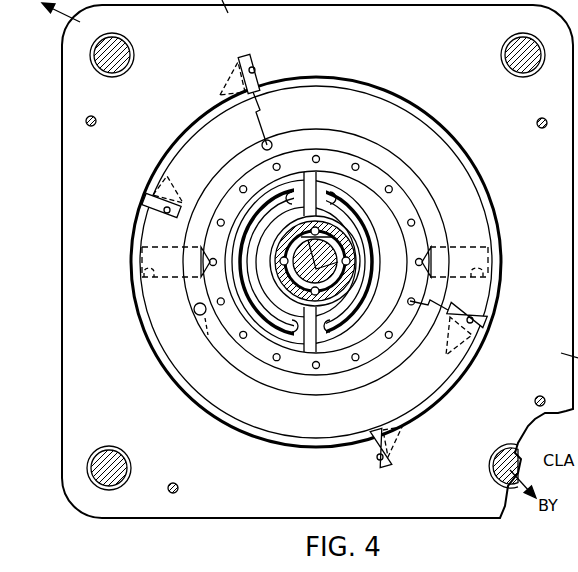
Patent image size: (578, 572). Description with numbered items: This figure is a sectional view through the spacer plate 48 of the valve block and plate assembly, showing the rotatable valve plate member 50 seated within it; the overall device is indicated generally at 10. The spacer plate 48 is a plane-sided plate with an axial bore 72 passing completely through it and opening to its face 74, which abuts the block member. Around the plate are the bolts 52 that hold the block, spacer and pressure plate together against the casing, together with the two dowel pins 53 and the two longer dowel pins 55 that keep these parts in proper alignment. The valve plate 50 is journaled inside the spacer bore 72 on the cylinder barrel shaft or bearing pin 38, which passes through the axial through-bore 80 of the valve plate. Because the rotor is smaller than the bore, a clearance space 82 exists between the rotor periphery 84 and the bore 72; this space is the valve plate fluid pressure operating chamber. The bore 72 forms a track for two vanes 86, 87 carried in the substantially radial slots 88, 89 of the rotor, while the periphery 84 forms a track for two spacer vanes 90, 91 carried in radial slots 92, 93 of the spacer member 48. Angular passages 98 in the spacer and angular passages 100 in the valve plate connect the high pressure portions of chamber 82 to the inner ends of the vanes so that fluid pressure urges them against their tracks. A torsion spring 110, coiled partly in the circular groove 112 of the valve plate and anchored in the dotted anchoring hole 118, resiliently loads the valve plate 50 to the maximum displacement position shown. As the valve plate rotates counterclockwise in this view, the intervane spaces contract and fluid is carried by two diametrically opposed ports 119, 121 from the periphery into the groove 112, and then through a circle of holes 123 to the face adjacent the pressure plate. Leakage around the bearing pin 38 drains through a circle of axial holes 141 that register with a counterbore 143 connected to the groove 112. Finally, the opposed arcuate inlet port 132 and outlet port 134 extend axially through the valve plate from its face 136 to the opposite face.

The apparatus 10 is at (279, 258).
The cylinder barrel shaft or bearing pin 38 is at (315, 262).
The spacer plate 48 is at (317, 261).
The rotatable valve plate member 50 is at (284, 222).
The bolts 52 is at (518, 457).
The dowel pins 53 is at (96, 117).
The dowel pins 55 is at (541, 118).
The axial bore 72 is at (370, 88).
The face 74 is at (457, 93).
The axial through-bore 80 is at (388, 240).
The clearance space 82 is at (462, 158).
The periphery of the rotor 84 is at (435, 123).
The vane 86 is at (152, 192).
The vane 87 is at (490, 318).
The radial slot 88 is at (148, 216).
The radial slot 89 is at (480, 335).
The vane 90 is at (258, 72).
The vane 91 is at (373, 462).
The radial slot 92 is at (250, 56).
The radial slot 93 is at (382, 468).
The vane slot angular passages 98 is at (222, 92).
The vane slot angular passages 100 is at (178, 185).
The torsion spring 110 is at (345, 380).
The circular recess or groove 112 is at (268, 382).
The anchoring hole 118 is at (204, 334).
The port 119 is at (143, 290).
The port 121 is at (500, 290).
The holes 123 is at (358, 163).
The inlet port 132 is at (244, 281).
The outlet port 134 is at (383, 248).
The face 136 is at (316, 250).
The axial holes 141 is at (336, 244).
The counterbore 143 is at (346, 259).